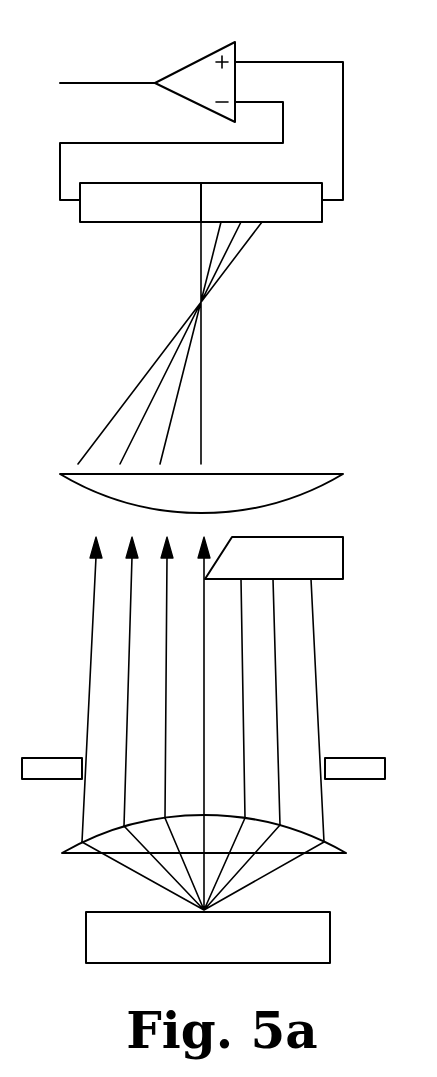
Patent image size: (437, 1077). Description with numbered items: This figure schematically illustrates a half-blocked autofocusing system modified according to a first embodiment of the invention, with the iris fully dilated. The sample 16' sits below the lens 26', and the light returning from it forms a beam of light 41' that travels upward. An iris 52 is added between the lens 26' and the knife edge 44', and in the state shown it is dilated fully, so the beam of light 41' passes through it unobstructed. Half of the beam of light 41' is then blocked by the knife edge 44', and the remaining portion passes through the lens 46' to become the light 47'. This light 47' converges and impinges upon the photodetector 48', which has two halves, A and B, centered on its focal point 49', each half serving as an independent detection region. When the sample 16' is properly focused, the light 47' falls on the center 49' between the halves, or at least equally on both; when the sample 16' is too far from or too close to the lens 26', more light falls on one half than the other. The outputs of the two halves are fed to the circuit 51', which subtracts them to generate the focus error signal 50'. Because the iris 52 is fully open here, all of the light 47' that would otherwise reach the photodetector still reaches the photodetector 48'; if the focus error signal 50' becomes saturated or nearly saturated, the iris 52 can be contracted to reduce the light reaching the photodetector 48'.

The circuit 51' is at (195, 65).
The focus error signal 50' is at (107, 60).
The photodetector 48' is at (197, 175).
The focal point 49' is at (172, 234).
The light 47' is at (153, 343).
The lens 46' is at (201, 471).
The knife edge 44' is at (307, 557).
The beam of light 41' is at (167, 723).
The iris 52 is at (357, 760).
The lens 26' is at (180, 853).
The sample 16' is at (185, 934).